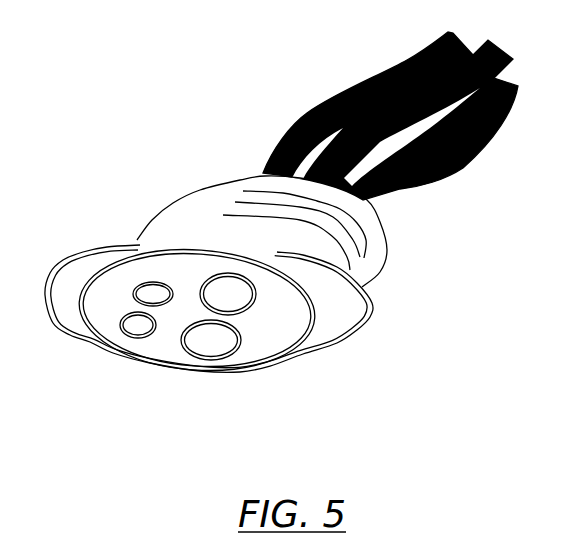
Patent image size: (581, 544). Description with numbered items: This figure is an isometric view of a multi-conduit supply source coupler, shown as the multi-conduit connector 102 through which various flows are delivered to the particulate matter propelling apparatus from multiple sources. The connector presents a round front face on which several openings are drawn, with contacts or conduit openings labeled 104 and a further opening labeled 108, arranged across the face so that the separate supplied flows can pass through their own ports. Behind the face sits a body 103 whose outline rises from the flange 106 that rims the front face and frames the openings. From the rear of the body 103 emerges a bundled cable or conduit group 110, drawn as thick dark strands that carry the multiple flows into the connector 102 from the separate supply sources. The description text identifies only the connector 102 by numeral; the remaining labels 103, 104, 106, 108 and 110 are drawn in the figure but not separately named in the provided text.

The multi-conduit connector 102 is at (128, 462).
The connector body 103 is at (183, 226).
The contacts 104 is at (155, 293).
The flange 106 is at (337, 307).
The hole 108 is at (119, 332).
The cable 110 is at (400, 182).